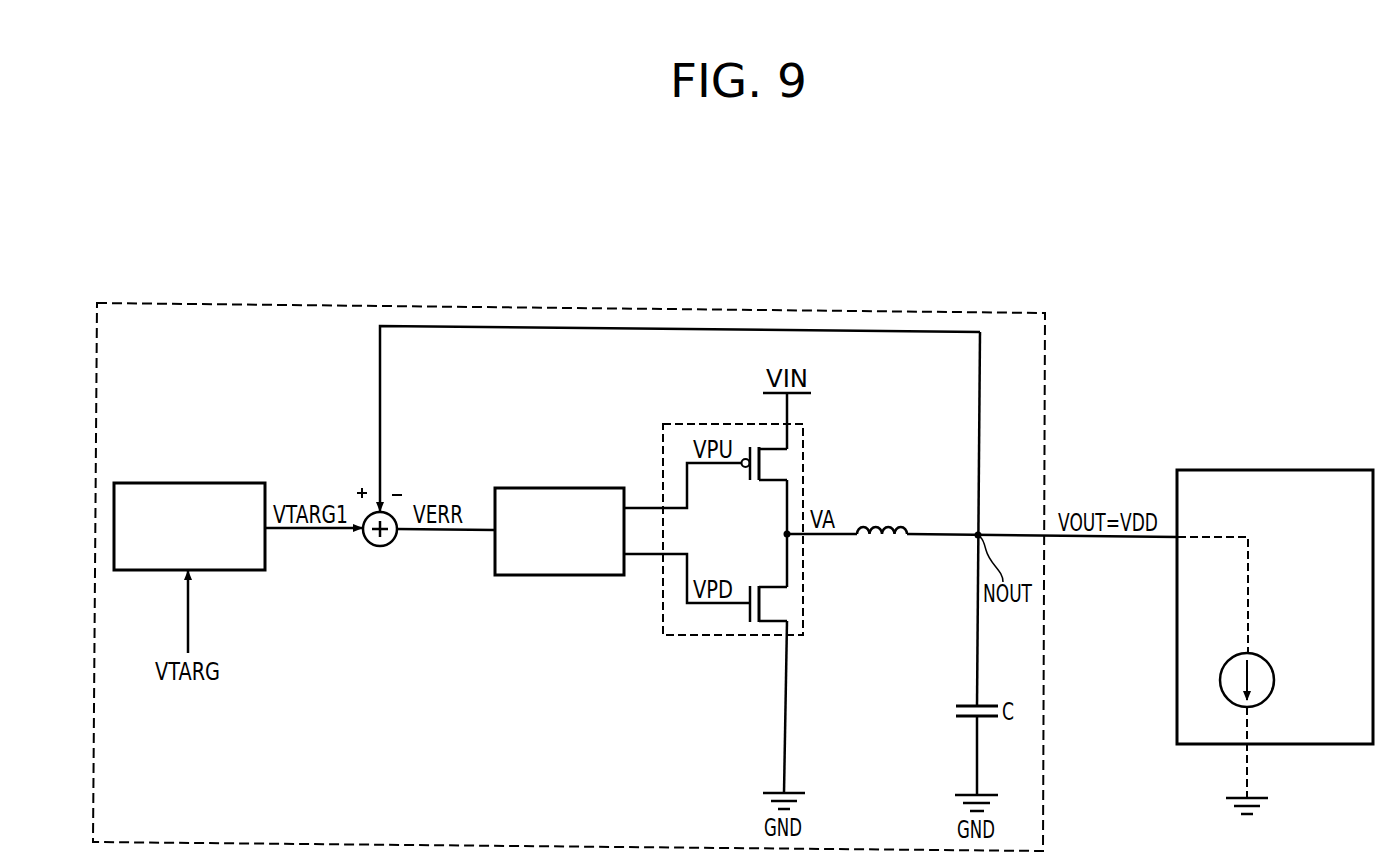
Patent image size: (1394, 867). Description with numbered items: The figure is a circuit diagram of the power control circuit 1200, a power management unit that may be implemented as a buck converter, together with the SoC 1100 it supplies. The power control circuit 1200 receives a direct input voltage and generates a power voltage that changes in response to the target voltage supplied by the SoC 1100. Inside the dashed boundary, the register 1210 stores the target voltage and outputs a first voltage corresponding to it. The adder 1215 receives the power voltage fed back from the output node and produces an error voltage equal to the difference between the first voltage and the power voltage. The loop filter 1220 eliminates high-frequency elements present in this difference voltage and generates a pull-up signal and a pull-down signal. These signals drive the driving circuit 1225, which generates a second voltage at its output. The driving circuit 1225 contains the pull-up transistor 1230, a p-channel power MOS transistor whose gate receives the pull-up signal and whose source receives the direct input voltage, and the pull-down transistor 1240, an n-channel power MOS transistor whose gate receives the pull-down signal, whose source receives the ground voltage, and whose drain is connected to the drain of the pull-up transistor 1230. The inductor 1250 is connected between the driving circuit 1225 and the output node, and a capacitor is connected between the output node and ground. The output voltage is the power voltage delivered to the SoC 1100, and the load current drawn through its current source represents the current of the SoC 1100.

The SoC 1100 is at (1275, 470).
The power control circuit 1200 is at (570, 308).
The register 1210 is at (188, 483).
The adder 1215 is at (378, 546).
The loop filter 1220 is at (557, 488).
The driving circuit 1225 is at (770, 562).
The pull-up transistor 1230 is at (772, 450).
The pull-down transistor 1240 is at (772, 592).
The inductor 1250 is at (883, 525).